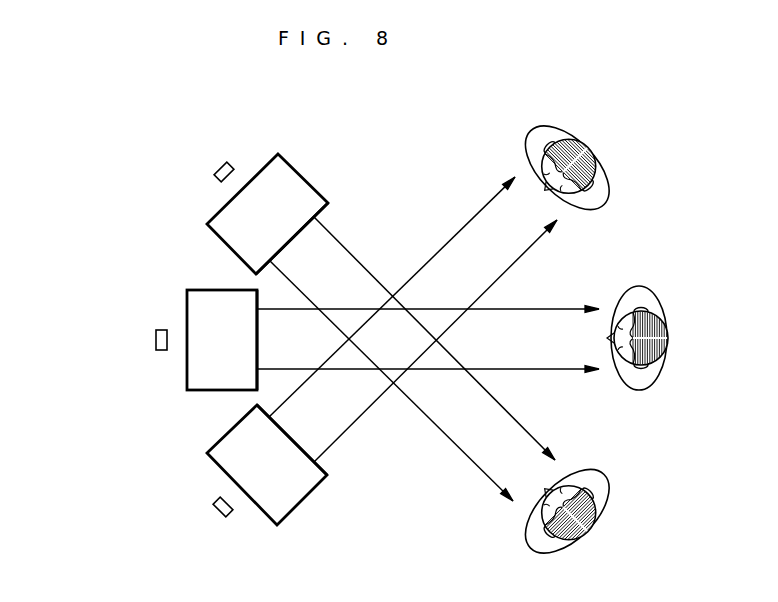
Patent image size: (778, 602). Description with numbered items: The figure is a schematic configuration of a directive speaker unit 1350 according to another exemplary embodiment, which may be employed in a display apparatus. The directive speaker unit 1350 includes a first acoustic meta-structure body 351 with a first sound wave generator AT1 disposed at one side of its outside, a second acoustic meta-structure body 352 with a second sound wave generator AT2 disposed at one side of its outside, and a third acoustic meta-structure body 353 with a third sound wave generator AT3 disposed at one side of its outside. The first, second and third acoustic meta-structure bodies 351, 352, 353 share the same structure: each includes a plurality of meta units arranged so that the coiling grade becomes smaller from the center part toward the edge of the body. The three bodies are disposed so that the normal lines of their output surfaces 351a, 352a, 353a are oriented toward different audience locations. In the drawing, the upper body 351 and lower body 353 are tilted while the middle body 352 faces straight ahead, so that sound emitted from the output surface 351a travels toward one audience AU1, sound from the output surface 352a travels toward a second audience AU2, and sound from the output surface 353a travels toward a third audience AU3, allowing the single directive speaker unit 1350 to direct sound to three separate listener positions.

The directive speaker unit 1350 is at (152, 145).
The first acoustic meta-structure body 351 is at (302, 183).
The output surface of first acoustic meta-structure body 351a is at (294, 238).
The second acoustic meta-structure body 352 is at (197, 300).
The output surface of second acoustic meta-structure body 352a is at (258, 339).
The third acoustic meta-structure body 353 is at (282, 505).
The output surface of third acoustic meta-structure body 353a is at (298, 443).
The first sound wave generator AT1 is at (233, 163).
The second sound wave generator AT2 is at (154, 338).
The third sound wave generator AT3 is at (218, 514).
The first audience / listener AU1 is at (573, 510).
The second audience / listener AU2 is at (666, 338).
The third audience / listener AU3 is at (577, 168).